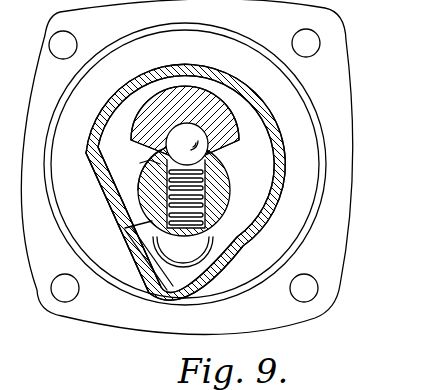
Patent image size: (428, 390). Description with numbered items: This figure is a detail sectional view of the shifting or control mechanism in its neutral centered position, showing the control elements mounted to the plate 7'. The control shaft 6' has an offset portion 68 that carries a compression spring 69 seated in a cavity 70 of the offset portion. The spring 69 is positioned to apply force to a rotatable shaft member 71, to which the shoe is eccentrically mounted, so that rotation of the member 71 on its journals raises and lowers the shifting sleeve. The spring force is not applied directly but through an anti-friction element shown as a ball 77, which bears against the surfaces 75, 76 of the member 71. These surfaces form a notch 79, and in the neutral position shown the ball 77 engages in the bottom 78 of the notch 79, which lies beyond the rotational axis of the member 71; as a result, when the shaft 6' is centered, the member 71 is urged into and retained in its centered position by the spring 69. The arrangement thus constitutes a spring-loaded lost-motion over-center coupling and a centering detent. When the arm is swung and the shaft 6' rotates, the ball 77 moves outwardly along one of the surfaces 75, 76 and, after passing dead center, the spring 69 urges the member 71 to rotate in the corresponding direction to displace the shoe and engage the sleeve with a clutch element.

The plate 7' is at (198, 167).
The cavity 70 is at (208, 207).
The compression spring 69 is at (150, 198).
The offset portion 68 is at (152, 222).
The surface 76 is at (231, 178).
The ball 77 is at (144, 171).
The notch 79 is at (206, 196).
The rotatable shaft member 71 is at (214, 90).
The surface 75 is at (140, 163).
The bottom of notch 78 is at (207, 142).
The shaft 6' is at (188, 255).